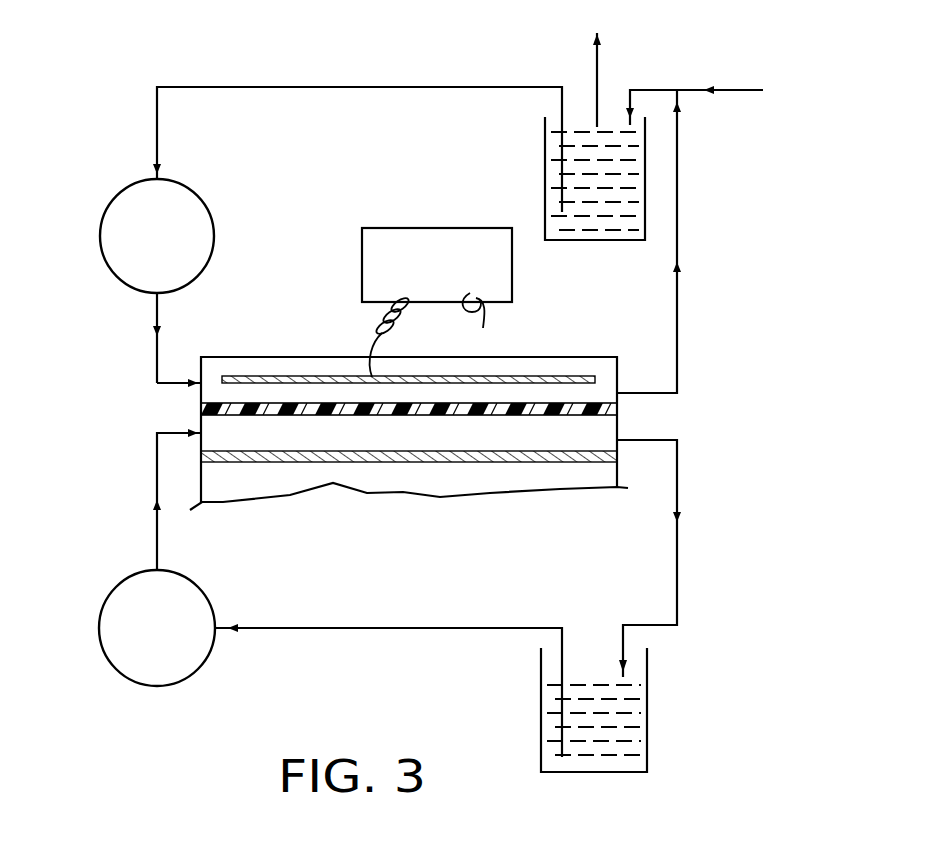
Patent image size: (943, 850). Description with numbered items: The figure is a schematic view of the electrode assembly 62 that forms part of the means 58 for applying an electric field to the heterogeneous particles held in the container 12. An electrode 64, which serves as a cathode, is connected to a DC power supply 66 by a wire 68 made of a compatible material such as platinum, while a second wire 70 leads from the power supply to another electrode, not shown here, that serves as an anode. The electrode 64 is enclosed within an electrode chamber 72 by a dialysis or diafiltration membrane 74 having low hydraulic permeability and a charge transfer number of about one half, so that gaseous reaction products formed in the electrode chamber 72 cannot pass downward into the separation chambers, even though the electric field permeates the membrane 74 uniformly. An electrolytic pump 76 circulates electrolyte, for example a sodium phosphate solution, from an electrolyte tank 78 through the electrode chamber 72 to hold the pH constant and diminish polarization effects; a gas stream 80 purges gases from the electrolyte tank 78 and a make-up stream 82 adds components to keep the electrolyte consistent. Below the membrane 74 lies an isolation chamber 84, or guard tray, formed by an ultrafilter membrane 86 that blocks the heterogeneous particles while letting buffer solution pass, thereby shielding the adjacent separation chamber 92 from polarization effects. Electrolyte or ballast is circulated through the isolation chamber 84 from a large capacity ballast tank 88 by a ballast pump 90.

The container 12 is at (692, 405).
The means for applying electric field 58 is at (135, 428).
The electrode assembly 62 is at (688, 323).
The electrode 64 is at (572, 376).
The DC power supply 66 is at (367, 253).
The wire 68 is at (380, 323).
The wire 70 is at (496, 326).
The electrode chamber 72 is at (210, 392).
The dialysis or diafiltration membrane 74 is at (565, 410).
The electrolytic pump 76 is at (112, 208).
The electrolyte tank 78 is at (548, 170).
The gas stream 80 is at (597, 77).
The make-up stream 82 is at (728, 90).
The isolation chamber 84 is at (347, 440).
The ultrafilter membrane 86 is at (486, 457).
The ballast tank 88 is at (627, 712).
The ballast pump 90 is at (173, 672).
The separation chamber 92 is at (231, 490).